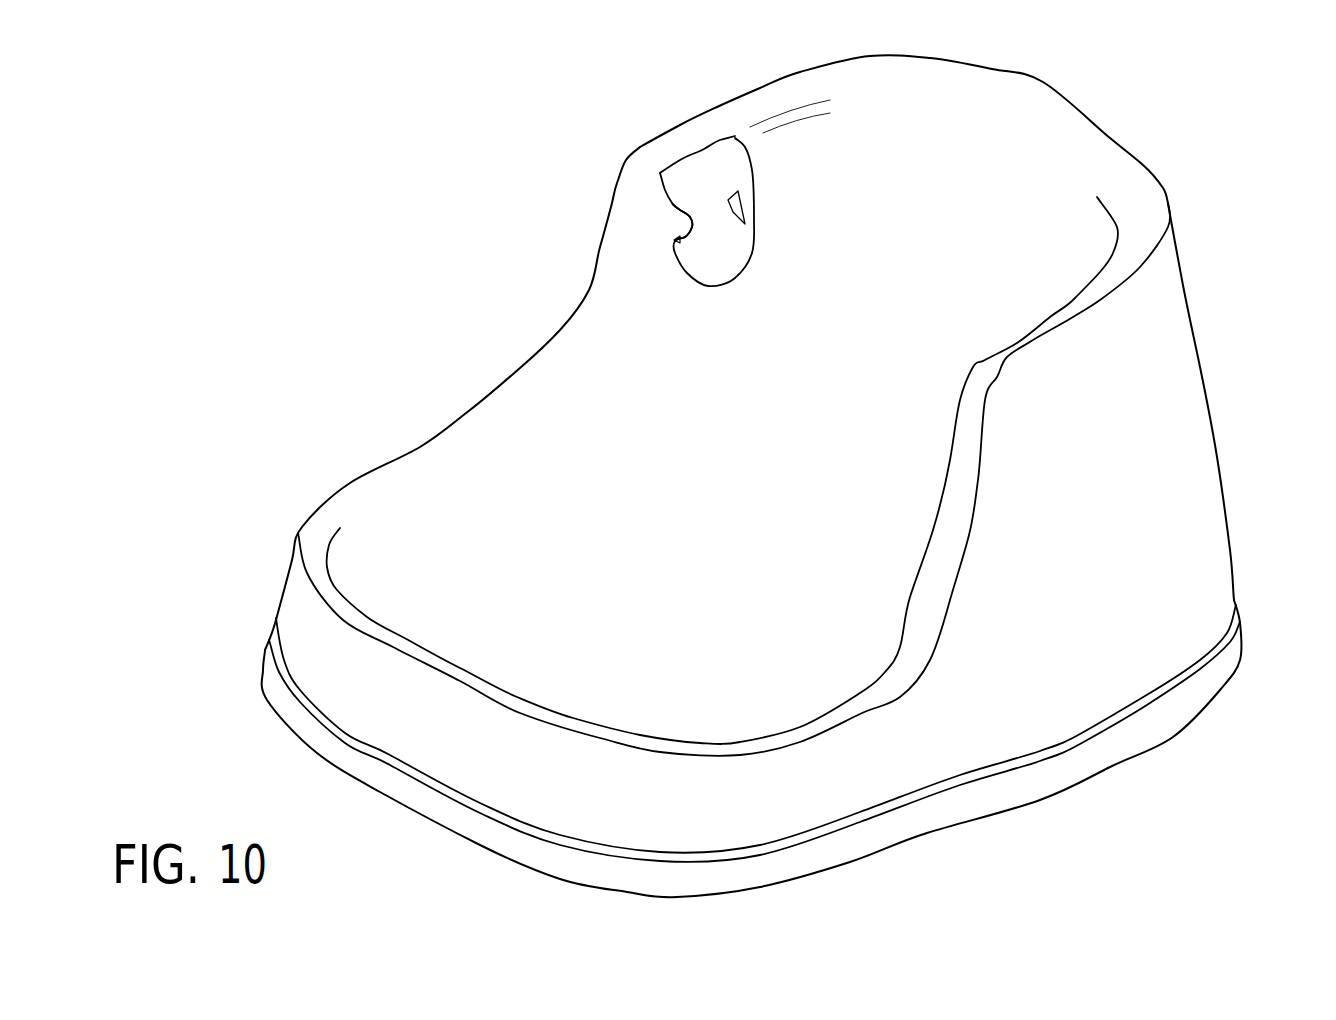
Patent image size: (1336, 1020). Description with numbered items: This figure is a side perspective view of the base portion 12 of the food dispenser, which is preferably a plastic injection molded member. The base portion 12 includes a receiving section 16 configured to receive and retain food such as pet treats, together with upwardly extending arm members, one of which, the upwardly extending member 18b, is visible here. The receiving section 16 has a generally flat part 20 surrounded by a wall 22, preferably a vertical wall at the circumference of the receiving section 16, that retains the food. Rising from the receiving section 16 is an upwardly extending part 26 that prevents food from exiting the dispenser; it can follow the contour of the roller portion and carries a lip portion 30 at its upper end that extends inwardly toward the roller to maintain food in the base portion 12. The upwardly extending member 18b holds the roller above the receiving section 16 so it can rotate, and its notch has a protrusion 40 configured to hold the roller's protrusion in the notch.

The base portion 12 is at (1153, 740).
The receiving section 16 is at (773, 633).
The upwardly extending member 18b is at (1150, 400).
The flat part 20 is at (488, 587).
The wall 22 is at (510, 770).
The upwardly extending part 26 is at (1028, 213).
The lip portion 30 is at (688, 183).
The protrusion 40 is at (727, 203).